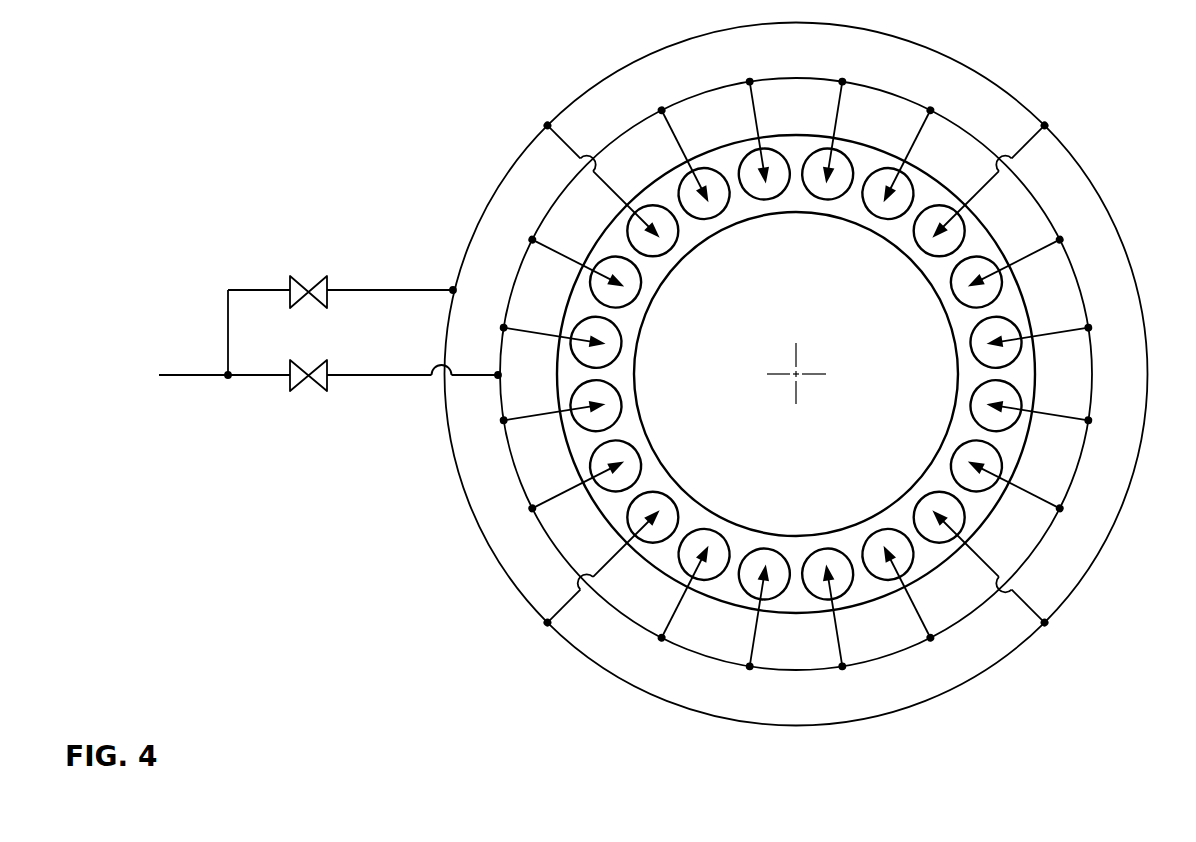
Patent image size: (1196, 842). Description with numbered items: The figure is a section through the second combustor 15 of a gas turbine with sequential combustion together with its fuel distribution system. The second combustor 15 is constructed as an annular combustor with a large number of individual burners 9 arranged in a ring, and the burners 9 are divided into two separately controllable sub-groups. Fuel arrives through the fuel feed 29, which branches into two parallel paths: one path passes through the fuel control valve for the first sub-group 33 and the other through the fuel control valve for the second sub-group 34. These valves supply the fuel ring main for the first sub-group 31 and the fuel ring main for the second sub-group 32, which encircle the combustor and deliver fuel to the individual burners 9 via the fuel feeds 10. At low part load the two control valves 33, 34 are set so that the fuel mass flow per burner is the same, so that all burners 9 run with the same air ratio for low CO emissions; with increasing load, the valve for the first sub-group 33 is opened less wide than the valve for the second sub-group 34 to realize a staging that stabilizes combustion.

The burner of second combustor 9 is at (982, 268).
The fuel feed 10 is at (554, 247).
The second combustor 15 is at (930, 558).
The fuel feed 29 is at (311, 339).
The fuel ring main for first sub-group 31 is at (547, 545).
The fuel ring main for second sub-group 32 is at (598, 669).
The fuel control valve for first sub-group 33 is at (308, 292).
The fuel control valve for second sub-group 34 is at (308, 376).